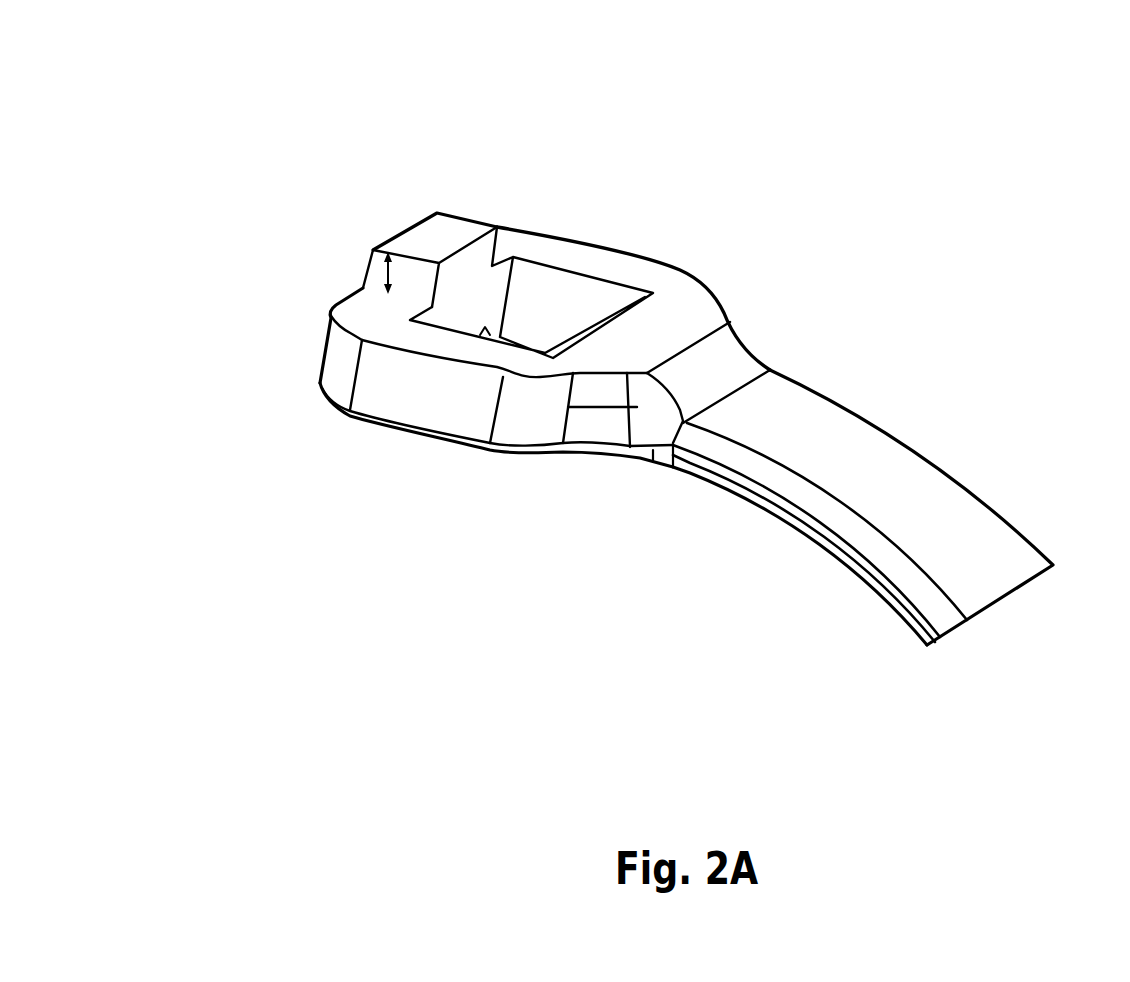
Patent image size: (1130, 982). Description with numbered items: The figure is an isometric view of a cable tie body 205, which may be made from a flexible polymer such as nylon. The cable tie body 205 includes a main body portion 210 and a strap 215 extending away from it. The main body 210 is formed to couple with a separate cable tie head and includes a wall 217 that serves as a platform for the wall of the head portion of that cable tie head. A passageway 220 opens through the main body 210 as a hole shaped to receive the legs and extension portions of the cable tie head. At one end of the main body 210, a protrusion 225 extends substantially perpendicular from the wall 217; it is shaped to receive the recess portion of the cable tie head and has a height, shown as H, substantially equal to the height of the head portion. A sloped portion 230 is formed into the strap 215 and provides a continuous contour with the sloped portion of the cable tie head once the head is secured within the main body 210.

The cable tie body 205 is at (236, 76).
The main body portion 210 is at (772, 200).
The strap 215 is at (924, 486).
The wall 217 is at (683, 310).
The passageway 220 is at (550, 313).
The protrusion 225 is at (362, 263).
The sloped portion 230 is at (737, 342).